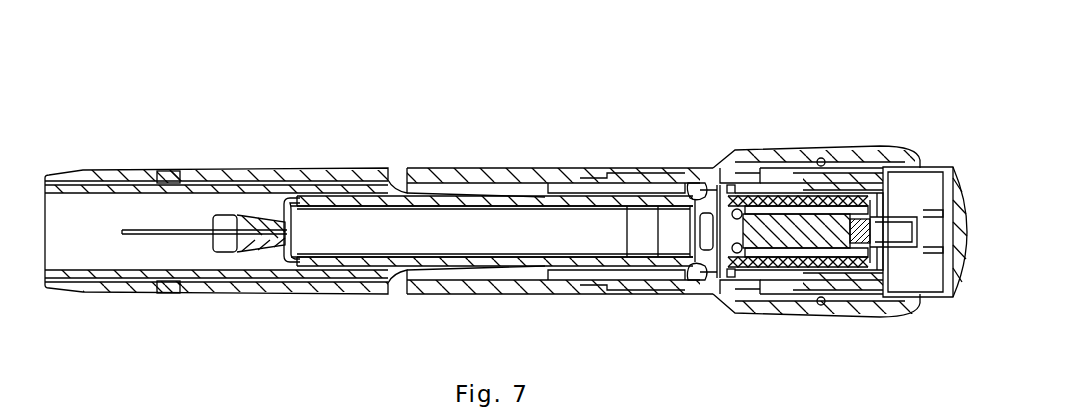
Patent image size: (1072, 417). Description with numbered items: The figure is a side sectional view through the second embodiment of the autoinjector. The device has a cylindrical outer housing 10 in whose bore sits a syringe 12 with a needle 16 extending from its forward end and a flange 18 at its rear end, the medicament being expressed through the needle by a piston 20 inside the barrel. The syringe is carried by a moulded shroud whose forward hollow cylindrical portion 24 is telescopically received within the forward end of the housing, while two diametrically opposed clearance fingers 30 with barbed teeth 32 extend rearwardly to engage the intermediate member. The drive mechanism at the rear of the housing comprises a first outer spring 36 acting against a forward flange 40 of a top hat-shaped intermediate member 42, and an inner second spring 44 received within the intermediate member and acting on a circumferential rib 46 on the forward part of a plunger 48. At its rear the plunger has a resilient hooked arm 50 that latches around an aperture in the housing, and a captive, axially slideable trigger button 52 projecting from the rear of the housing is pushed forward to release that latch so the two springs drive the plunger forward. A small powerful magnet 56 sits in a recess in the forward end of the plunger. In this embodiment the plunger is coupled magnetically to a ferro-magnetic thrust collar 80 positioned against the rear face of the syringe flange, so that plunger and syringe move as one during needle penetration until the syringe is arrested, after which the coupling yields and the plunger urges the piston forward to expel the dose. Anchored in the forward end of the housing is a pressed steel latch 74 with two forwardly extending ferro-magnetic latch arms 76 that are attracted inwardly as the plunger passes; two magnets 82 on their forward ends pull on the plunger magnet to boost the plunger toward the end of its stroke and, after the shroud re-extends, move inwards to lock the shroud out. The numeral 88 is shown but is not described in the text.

The outer housing 10 is at (332, 166).
The syringe 12 is at (553, 247).
The needle 16 is at (145, 228).
The flange 18 is at (696, 185).
The piston 20 is at (645, 262).
The forward hollow cylindrical portion 24 is at (243, 276).
The clearance fingers 30 is at (727, 185).
The barbed teeth 32 is at (742, 300).
The first outer spring 36 is at (797, 168).
The forward flange 40 is at (740, 178).
The intermediate member 42 is at (858, 185).
The second spring 44 is at (830, 303).
The circumferential rib 46 is at (772, 300).
The plunger 48 is at (863, 303).
The hooked arm 50 is at (900, 230).
The trigger button 52 is at (953, 268).
The magnet 56 is at (700, 232).
The latch 74 is at (338, 272).
The latch arms 76 is at (244, 183).
The thrust collar 80 is at (705, 195).
The magnets 82 is at (172, 171).
The sleeve flange 88 is at (826, 164).